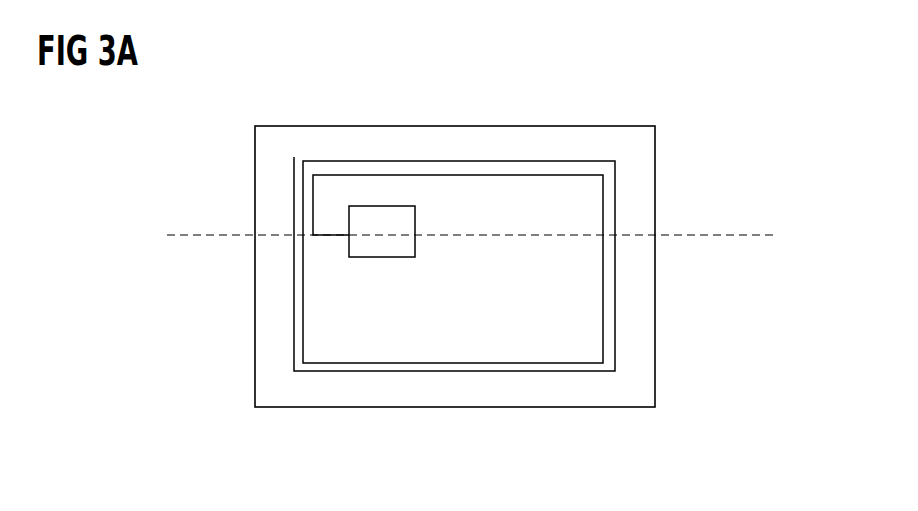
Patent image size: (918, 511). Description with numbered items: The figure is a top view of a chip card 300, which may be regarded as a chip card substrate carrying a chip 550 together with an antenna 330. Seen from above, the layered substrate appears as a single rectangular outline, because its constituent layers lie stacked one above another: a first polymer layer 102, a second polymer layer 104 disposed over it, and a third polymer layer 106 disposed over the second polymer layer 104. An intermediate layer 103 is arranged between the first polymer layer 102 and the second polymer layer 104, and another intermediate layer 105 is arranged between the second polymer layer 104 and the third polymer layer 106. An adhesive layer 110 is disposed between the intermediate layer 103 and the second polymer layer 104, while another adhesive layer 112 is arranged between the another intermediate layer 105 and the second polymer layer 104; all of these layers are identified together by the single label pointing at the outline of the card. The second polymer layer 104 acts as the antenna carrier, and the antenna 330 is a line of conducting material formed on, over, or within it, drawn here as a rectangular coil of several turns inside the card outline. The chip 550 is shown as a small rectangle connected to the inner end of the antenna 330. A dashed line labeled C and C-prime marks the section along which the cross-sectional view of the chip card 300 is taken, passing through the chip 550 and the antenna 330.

The chip card 300 is at (773, 88).
The antenna 330 is at (295, 247).
The chip 550 is at (380, 220).
The first polymer layer 102 is at (393, 398).
The intermediate layer 103 is at (532, 297).
The second polymer layer 104 is at (532, 297).
The another intermediate layer 105 is at (532, 297).
The third polymer layer 106 is at (532, 297).
The adhesive layer 110 is at (532, 297).
The another adhesive layer 112 is at (532, 297).